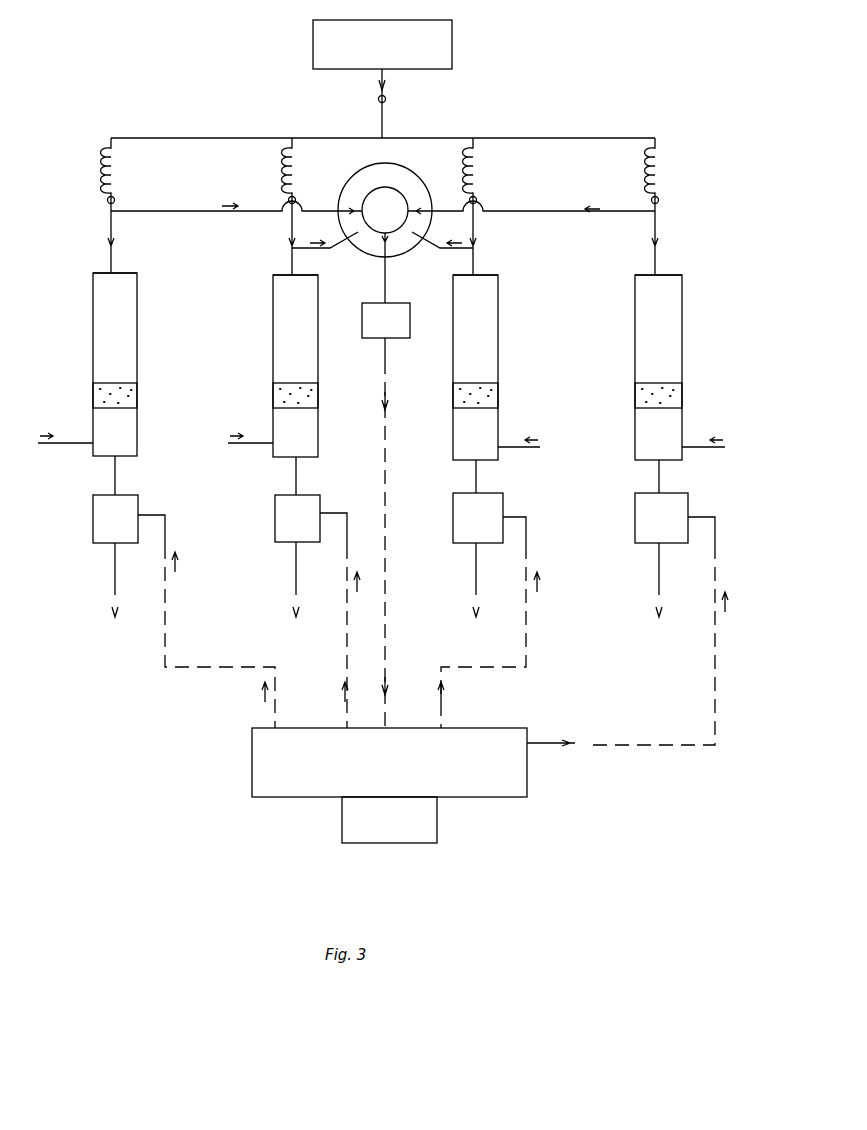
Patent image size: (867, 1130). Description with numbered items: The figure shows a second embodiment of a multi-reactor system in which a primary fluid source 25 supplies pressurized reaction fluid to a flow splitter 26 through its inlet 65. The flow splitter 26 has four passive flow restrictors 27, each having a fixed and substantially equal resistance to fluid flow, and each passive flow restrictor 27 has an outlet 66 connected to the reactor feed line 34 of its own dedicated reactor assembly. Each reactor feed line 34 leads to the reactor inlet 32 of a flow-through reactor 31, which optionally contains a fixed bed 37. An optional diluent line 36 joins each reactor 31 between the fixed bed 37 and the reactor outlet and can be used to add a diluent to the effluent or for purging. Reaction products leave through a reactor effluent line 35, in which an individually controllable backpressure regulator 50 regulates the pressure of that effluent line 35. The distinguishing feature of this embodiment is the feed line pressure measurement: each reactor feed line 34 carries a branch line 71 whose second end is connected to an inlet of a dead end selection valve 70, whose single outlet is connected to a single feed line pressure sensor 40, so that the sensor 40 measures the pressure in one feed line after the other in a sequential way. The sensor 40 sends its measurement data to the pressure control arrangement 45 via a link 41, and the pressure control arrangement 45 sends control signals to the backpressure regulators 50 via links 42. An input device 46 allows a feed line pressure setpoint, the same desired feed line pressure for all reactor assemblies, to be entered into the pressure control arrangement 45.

The primary fluid source 25 is at (450, 50).
The inlet 65 is at (386, 97).
The flow splitter 26 is at (383, 128).
The passive flow restrictor 27 is at (98, 175).
The outlet 66 is at (115, 199).
The branch line 71 is at (172, 211).
The dead end selection valve 70 is at (420, 180).
The reactor feed line 34 is at (113, 250).
The reactor inlet 32 is at (90, 271).
The flow-through reactor 31 is at (93, 335).
The fixed bed 37 is at (137, 392).
The diluent line 36 is at (42, 445).
The backpressure regulator 50 is at (93, 518).
The reactor effluent line 35 is at (113, 580).
The link 42 is at (165, 615).
The feed line pressure sensor 40 is at (400, 333).
The link 41 is at (386, 583).
The pressure control arrangement 45 is at (510, 787).
The input device 46 is at (420, 838).